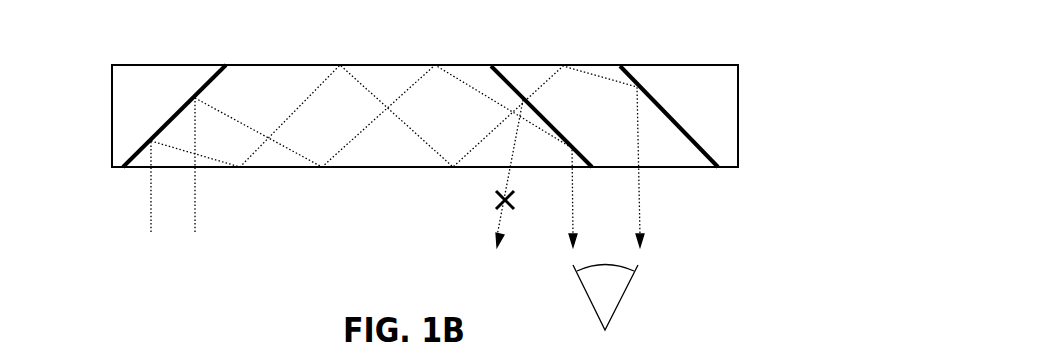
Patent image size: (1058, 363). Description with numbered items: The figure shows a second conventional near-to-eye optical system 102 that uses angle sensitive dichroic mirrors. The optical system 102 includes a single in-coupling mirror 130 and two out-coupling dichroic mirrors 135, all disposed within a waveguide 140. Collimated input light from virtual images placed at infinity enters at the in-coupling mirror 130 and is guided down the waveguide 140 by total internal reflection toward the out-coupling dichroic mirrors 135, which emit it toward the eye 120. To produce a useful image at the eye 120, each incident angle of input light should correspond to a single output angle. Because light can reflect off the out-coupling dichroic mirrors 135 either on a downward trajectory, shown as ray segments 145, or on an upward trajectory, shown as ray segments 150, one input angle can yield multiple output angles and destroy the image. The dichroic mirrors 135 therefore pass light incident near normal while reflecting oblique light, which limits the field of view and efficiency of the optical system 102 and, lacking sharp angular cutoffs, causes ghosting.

The near-to-eye optical system 102 is at (248, 248).
The eye 120 is at (622, 300).
The in-coupling mirror 130 is at (173, 115).
The out-coupling dichroic mirrors 135 is at (514, 87).
The waveguide 140 is at (270, 64).
The ray segments 145 is at (457, 73).
The ray segments 150 is at (488, 138).